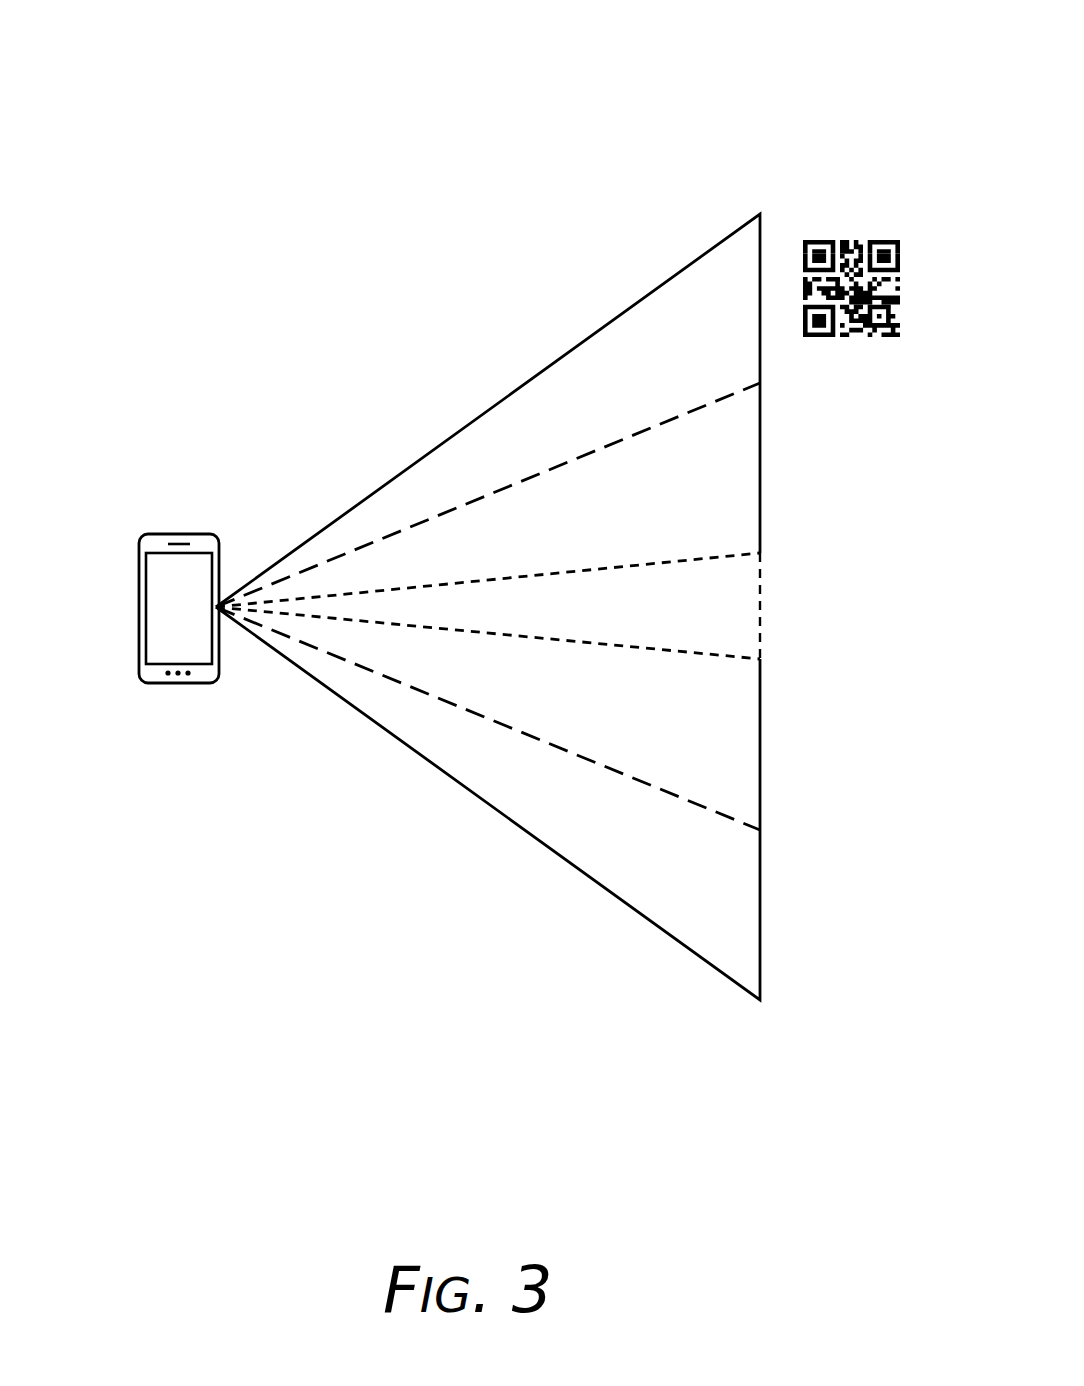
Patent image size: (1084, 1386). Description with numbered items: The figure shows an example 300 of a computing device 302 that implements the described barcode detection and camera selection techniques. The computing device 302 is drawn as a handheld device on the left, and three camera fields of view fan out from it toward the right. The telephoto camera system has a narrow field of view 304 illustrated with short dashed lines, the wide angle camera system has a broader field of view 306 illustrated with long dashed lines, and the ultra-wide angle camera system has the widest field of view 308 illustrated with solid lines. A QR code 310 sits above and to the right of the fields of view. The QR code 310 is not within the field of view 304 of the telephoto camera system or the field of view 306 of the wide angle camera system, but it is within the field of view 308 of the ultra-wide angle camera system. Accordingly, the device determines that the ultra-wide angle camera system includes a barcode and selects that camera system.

The example 300 is at (840, 70).
The computing device 302 is at (139, 590).
The field of view of the telephoto camera system 304 is at (383, 590).
The field of view of the wide angle camera system 306 is at (460, 506).
The field of view of the ultra-wide angle camera system 308 is at (545, 369).
The QR code 310 is at (850, 240).